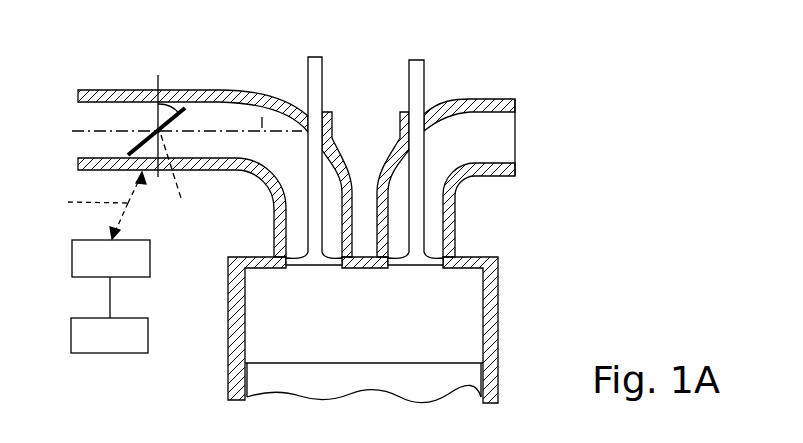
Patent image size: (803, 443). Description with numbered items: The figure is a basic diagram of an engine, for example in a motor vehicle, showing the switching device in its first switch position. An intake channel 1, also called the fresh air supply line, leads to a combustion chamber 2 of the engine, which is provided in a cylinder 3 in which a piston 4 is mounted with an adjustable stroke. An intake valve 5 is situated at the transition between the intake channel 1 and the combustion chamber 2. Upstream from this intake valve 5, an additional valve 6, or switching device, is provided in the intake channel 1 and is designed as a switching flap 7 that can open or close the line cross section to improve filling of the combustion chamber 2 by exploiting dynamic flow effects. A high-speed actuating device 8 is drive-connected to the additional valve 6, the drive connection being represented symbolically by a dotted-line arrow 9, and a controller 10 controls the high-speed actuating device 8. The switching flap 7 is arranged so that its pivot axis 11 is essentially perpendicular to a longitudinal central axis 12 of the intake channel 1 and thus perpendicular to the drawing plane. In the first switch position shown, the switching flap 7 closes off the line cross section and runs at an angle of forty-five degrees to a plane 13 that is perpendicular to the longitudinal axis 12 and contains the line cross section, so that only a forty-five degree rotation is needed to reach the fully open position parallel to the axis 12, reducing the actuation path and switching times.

The intake channel 1 is at (110, 90).
The combustion chamber 2 is at (355, 334).
The cylinder 3 is at (498, 313).
The piston 4 is at (425, 377).
The intake valve 5 is at (317, 185).
The additional valve 6 is at (153, 124).
The switching flap 7 is at (186, 107).
The high-speed actuating device 8 is at (103, 271).
The dotted-line arrow 9 is at (98, 205).
The controller 10 is at (96, 349).
The pivot axis 11 is at (180, 181).
The longitudinal central axis 12 is at (270, 92).
The plane 13 is at (160, 78).